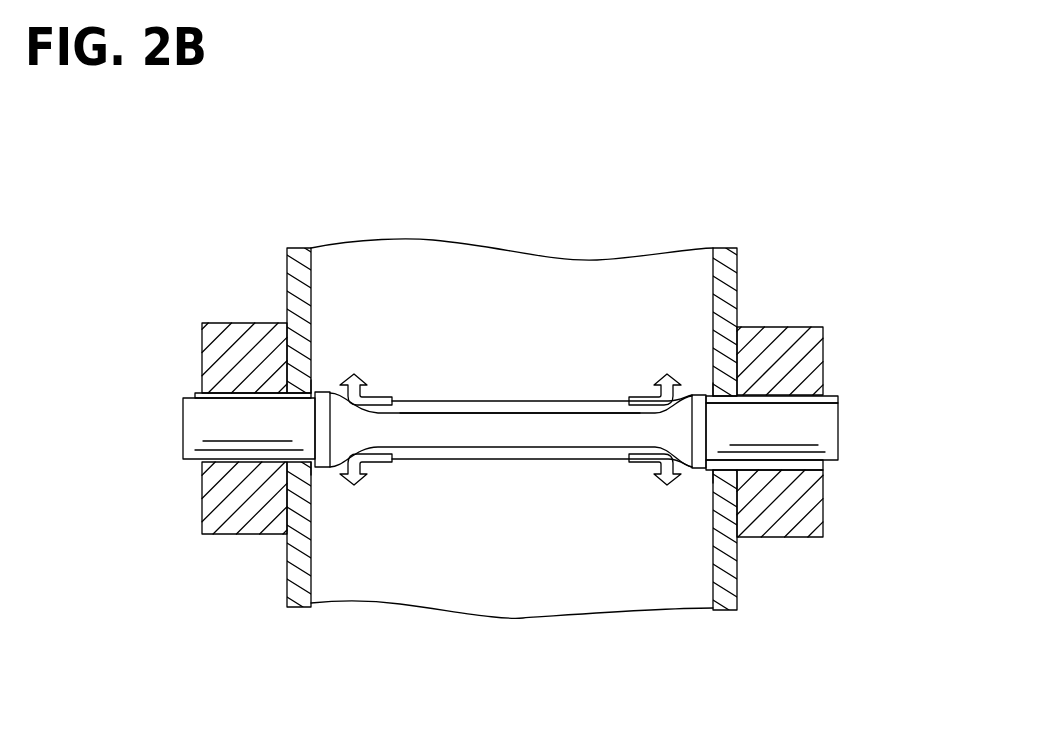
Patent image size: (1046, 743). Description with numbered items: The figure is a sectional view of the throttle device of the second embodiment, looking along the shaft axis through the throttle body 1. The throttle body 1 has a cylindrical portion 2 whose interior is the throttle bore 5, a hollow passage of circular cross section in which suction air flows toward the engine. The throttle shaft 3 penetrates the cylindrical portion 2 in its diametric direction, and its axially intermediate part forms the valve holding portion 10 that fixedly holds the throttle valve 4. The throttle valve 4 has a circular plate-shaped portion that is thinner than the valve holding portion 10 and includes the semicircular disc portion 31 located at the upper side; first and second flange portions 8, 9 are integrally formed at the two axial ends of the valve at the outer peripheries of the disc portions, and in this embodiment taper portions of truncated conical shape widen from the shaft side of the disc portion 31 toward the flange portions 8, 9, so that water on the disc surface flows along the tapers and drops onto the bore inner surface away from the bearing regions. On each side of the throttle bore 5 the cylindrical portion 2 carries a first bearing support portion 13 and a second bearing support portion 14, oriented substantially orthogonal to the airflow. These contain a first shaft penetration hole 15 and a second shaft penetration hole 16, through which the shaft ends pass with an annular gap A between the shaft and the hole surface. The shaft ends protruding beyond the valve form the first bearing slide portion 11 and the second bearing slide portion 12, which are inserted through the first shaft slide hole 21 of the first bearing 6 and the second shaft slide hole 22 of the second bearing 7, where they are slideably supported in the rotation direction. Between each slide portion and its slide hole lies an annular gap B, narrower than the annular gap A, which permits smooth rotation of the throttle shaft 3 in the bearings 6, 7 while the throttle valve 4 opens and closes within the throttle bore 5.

The throttle body 1 is at (729, 235).
The cylindrical portion 2 is at (303, 250).
The throttle shaft 3 is at (178, 453).
The throttle valve 4 is at (455, 457).
The throttle bore 5 is at (588, 577).
The first bearing 6 is at (243, 330).
The second bearing 7 is at (783, 330).
The first flange portion 8 is at (324, 468).
The second flange portion 9 is at (700, 470).
The valve holding portion 10 is at (493, 460).
The first bearing slide portion 11 is at (197, 427).
The second bearing slide portion 12 is at (815, 437).
The first bearing support portion 13 is at (303, 357).
The second bearing support portion 14 is at (713, 358).
The first shaft penetration hole 15 is at (326, 393).
The second shaft penetration hole 16 is at (690, 392).
The first shaft slide hole 21 is at (200, 395).
The second shaft slide hole 22 is at (828, 397).
The disc portion 31 is at (478, 413).
The annular gap A is at (277, 466).
The annular gap B is at (215, 466).